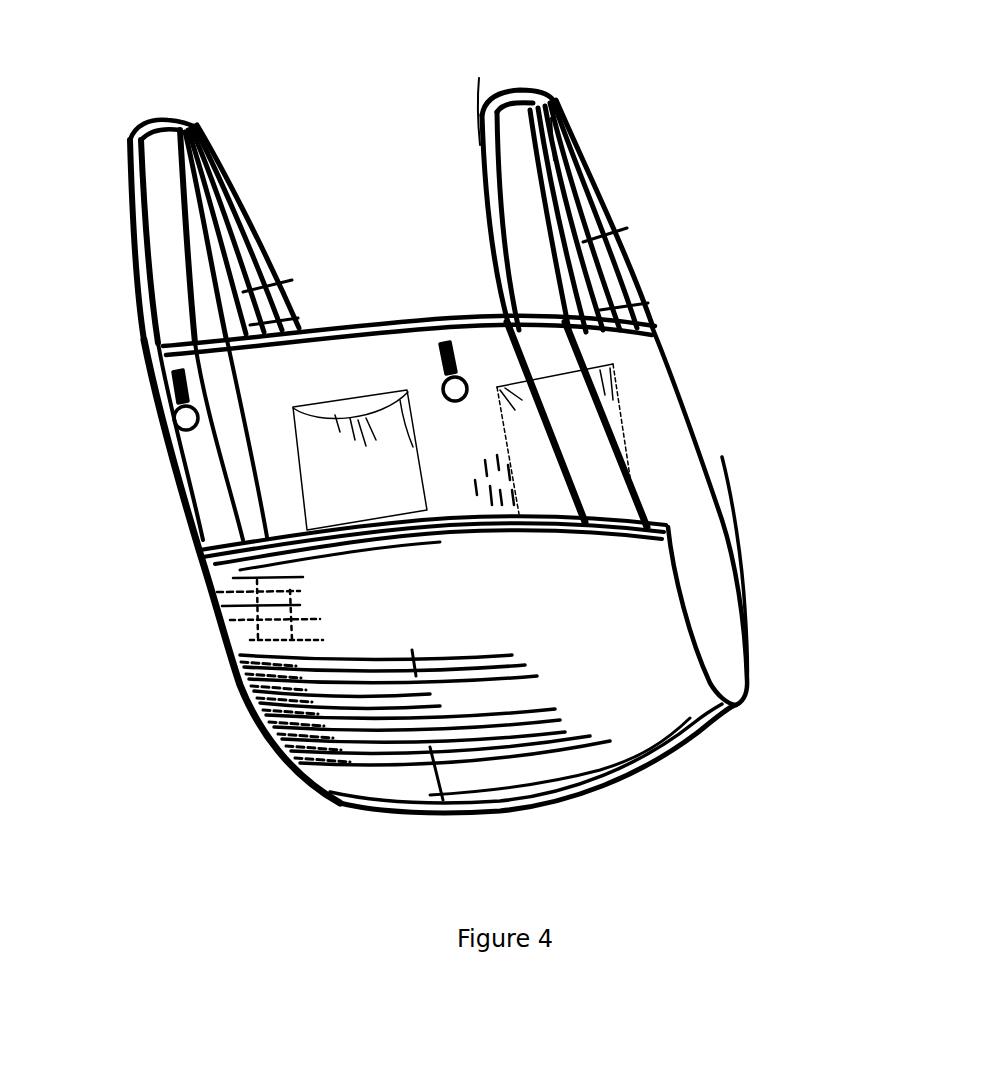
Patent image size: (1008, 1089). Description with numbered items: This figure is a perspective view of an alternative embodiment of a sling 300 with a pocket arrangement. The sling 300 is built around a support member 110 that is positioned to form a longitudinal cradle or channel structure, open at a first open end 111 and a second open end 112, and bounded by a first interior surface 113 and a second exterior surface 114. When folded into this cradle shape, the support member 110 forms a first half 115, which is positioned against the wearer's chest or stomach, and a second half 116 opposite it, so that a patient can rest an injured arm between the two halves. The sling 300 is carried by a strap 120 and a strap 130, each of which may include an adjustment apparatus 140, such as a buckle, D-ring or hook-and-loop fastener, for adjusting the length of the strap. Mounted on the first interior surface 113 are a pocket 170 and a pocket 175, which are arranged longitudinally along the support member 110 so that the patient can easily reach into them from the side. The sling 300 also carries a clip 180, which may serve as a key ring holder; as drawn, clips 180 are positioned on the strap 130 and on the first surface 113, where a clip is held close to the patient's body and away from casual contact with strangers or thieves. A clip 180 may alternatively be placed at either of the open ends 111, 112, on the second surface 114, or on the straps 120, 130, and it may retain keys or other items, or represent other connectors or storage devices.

The sling 300 is at (718, 90).
The support member 110 is at (718, 582).
The first open end 111 is at (790, 610).
The second open end 112 is at (178, 674).
The first interior surface 113 is at (657, 400).
The second exterior surface 114 is at (660, 715).
The first half 115 is at (472, 308).
The second half 116 is at (313, 592).
The strap 120 is at (520, 92).
The strap 130 is at (173, 121).
The adjustment apparatus 140 is at (630, 240).
The pocket 170 is at (612, 380).
The pocket 175 is at (320, 452).
The clip 180 is at (443, 340).